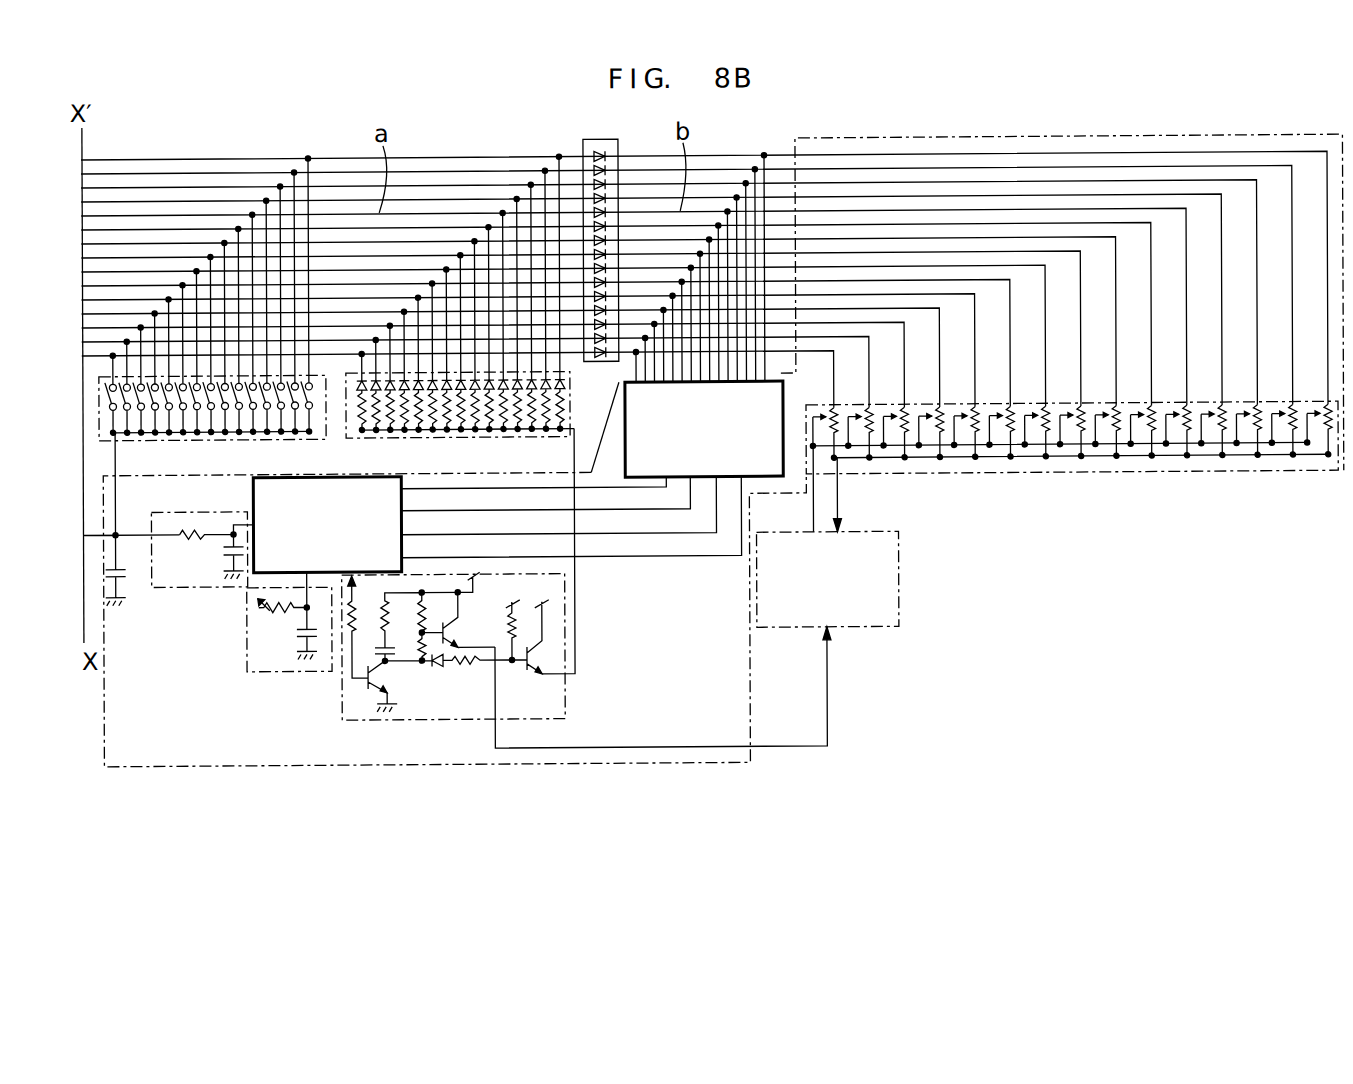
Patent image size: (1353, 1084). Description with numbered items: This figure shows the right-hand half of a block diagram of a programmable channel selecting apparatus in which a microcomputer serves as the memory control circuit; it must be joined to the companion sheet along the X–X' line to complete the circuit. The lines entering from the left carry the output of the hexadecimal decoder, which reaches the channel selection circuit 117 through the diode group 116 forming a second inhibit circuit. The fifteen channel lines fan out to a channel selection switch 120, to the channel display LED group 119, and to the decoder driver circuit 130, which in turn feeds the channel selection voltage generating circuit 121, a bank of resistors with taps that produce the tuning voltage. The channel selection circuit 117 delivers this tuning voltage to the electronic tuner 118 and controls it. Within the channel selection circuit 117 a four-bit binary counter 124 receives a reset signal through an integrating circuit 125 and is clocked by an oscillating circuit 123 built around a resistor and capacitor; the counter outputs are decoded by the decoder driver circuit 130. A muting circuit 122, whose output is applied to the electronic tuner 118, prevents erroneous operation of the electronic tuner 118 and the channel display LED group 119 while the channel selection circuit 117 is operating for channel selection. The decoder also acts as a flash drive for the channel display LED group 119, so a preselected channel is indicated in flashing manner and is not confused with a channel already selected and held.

The diode group 116 is at (612, 121).
The channel selection circuit 117 is at (668, 768).
The electronic tuner 118 is at (899, 560).
The channel display LED group 119 is at (492, 443).
The channel selection switch 120 is at (198, 443).
The channel selection voltage generating circuit 121 is at (1100, 484).
The muting circuit 122 is at (408, 722).
The oscillating circuit 123 is at (258, 673).
The 4-bit binary counter 124 is at (366, 479).
The integrating circuit 125 is at (170, 522).
The decoder driver circuit 130 is at (784, 389).